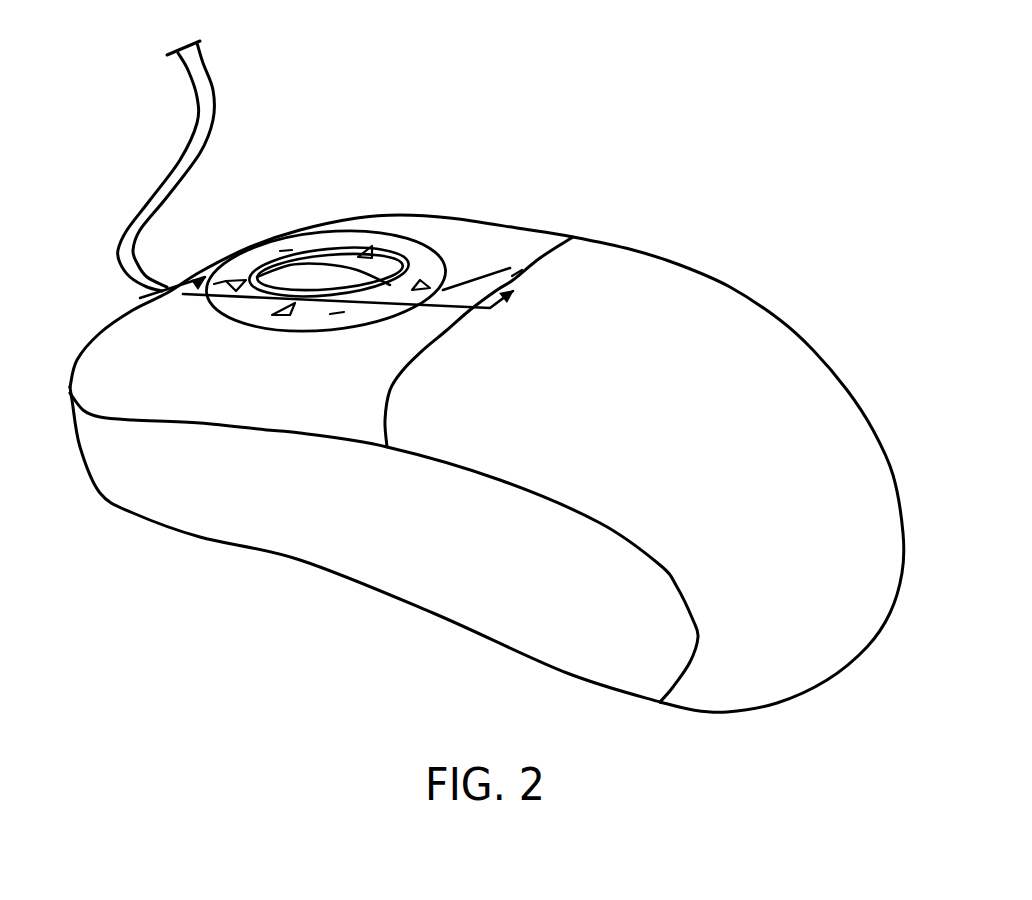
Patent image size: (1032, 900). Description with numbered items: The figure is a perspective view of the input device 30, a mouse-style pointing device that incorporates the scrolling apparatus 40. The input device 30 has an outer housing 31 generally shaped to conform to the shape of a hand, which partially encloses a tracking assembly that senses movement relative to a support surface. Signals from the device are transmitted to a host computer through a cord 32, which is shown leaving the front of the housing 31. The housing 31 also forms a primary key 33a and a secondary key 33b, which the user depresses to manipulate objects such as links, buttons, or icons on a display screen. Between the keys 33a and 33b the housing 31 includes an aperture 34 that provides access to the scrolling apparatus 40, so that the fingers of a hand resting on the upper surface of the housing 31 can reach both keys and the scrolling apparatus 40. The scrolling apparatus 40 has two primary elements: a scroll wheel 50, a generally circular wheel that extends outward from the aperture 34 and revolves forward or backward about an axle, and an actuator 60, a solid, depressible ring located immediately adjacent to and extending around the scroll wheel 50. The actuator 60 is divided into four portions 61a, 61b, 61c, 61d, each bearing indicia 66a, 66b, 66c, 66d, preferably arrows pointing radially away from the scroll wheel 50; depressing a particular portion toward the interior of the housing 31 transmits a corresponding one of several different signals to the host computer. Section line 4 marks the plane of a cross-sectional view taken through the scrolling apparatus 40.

The input device 30 is at (627, 187).
The outer housing 31 is at (443, 587).
The cord 32 is at (210, 77).
The primary key 33a is at (115, 350).
The secondary key 33b is at (532, 240).
The aperture 34 is at (293, 328).
The scrolling apparatus 40 is at (337, 241).
The scroll wheel 50 is at (307, 273).
The actuator 60 is at (397, 257).
The first portion of actuator 61a is at (220, 280).
The second portion of actuator 61b is at (286, 251).
The third portion of actuator 61c is at (517, 273).
The fourth portion of actuator 61d is at (337, 313).
The indicia 66a is at (237, 280).
The indicia 66b is at (367, 250).
The indicia 66c is at (430, 287).
The indicia 66d is at (287, 310).
The section line 4- 4 is at (338, 311).